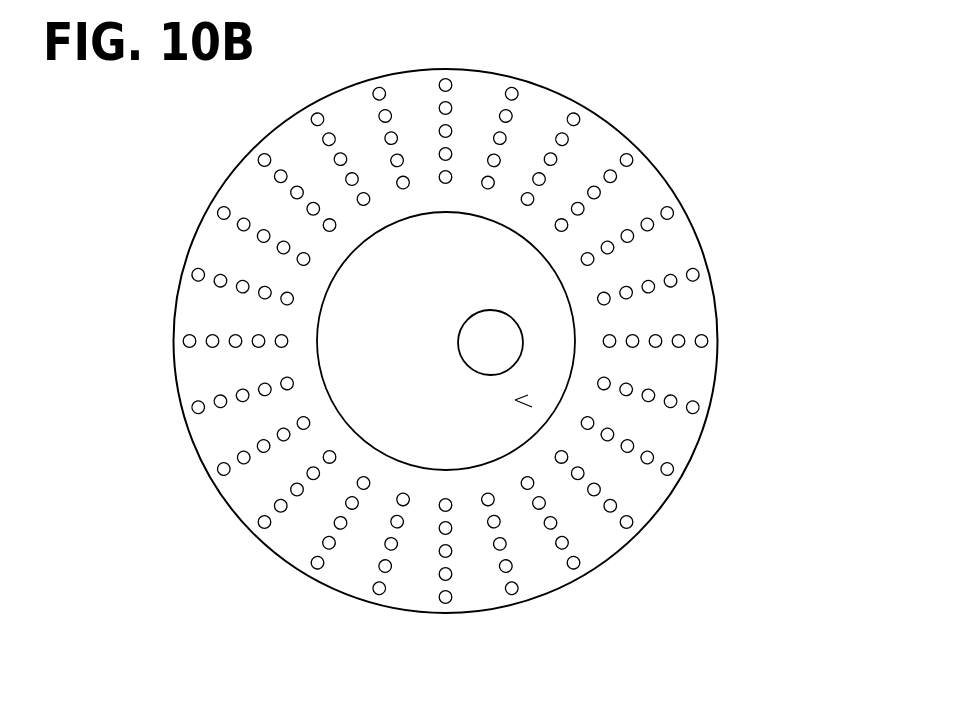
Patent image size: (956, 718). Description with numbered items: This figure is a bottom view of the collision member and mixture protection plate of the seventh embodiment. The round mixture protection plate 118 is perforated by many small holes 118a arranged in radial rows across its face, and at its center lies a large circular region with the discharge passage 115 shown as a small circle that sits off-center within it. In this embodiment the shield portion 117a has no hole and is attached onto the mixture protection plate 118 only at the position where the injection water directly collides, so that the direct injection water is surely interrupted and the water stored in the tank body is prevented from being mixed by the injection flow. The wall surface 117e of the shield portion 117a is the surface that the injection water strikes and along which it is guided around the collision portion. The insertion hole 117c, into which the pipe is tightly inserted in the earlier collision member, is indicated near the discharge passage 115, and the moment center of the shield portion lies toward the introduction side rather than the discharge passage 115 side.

The mixture protection plate 118 is at (673, 248).
The holes of the mixture protection plate 118a is at (670, 211).
The discharge passage 115 is at (502, 333).
The insertion hole 117c is at (498, 345).
The shield portion 117a is at (515, 400).
The wall surface 117e is at (397, 350).